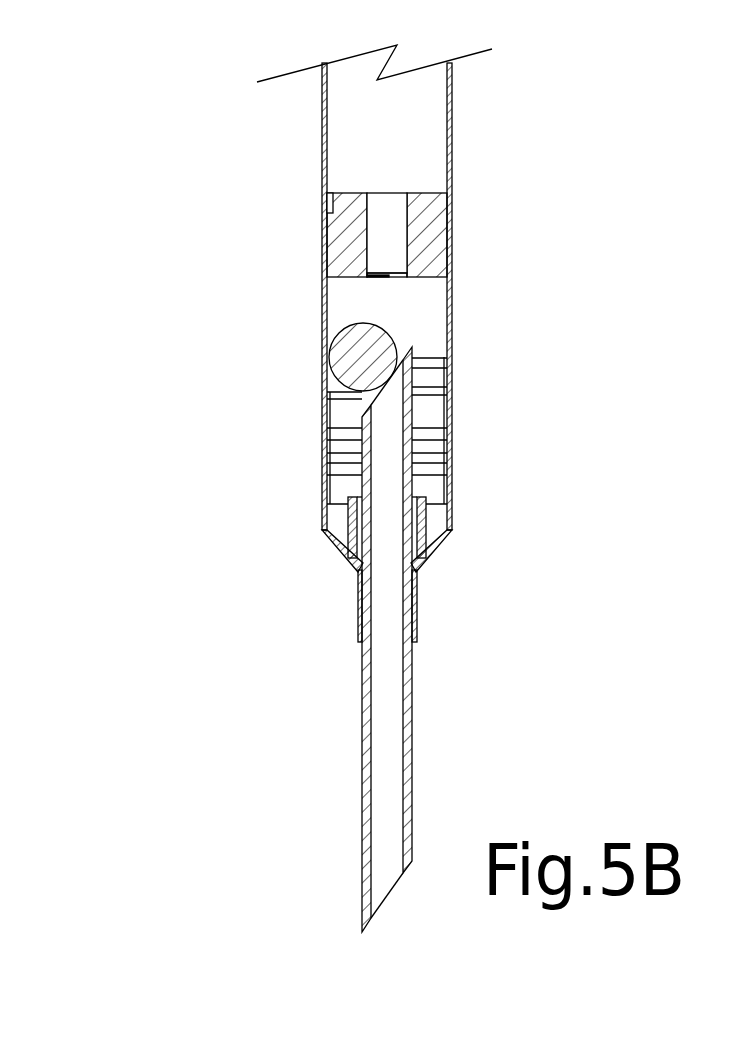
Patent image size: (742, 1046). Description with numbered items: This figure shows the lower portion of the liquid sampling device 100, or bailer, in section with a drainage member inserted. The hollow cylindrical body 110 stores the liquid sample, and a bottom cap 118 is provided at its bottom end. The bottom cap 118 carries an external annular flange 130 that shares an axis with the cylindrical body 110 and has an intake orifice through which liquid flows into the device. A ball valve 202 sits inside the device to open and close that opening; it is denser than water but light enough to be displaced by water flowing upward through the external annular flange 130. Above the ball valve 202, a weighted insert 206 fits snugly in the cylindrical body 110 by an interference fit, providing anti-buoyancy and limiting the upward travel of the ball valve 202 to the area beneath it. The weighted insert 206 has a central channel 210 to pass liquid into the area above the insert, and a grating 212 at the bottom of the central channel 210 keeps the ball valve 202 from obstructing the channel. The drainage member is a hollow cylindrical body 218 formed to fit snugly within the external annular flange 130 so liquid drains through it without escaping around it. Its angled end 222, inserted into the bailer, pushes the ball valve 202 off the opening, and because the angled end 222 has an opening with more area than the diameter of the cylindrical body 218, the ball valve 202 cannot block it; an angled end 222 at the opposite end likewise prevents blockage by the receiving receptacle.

The liquid sampling device 100 is at (411, 499).
The cylindrical body 110 is at (452, 318).
The bottom cap 118 is at (447, 548).
The external annular flange 130 is at (360, 583).
The ball valve 202 is at (355, 352).
The weighted insert 206 is at (323, 213).
The central channel 210 is at (393, 233).
The grating 212 is at (380, 276).
The hollow cylindrical body 218 is at (390, 685).
The angled end 222 is at (388, 897).